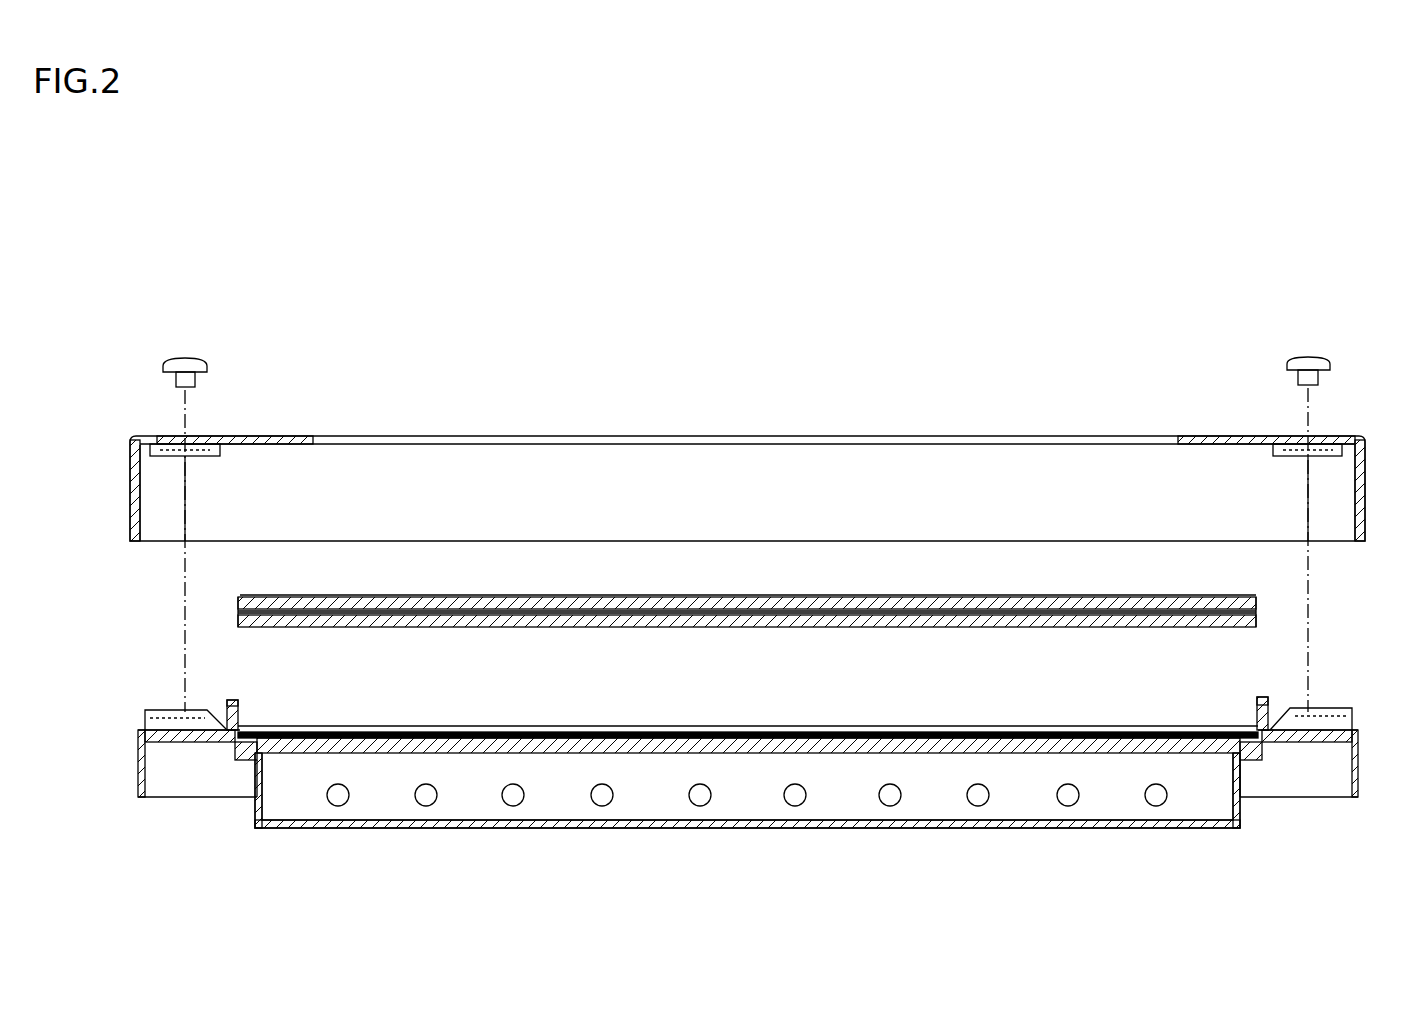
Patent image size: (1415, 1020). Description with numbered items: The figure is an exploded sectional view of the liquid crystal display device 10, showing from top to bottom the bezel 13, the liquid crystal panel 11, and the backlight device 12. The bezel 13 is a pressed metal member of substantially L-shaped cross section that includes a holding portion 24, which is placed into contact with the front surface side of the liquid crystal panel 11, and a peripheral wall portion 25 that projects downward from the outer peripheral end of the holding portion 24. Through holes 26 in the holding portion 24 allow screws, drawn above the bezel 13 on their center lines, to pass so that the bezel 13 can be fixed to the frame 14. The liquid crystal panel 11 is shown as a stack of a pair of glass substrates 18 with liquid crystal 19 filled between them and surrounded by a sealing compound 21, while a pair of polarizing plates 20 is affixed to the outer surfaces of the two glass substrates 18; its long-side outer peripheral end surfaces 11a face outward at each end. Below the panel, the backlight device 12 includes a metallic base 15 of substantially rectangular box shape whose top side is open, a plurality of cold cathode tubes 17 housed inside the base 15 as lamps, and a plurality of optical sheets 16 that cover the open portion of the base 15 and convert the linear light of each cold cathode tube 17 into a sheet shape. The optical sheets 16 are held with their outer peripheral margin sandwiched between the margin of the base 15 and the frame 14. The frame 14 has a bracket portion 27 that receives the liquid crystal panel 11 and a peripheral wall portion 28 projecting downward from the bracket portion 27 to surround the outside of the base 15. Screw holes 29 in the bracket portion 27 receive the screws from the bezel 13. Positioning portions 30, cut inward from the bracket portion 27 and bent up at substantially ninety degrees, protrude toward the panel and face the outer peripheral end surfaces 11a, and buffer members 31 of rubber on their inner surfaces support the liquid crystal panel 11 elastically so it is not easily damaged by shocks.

The liquid crystal display device 10 is at (907, 420).
The liquid crystal panel 11 is at (783, 619).
The outer peripheral end surface 11a is at (238, 616).
The backlight device 12 is at (905, 863).
The bezel 13 is at (268, 440).
The frame 14 is at (138, 742).
The base 15 is at (287, 828).
The optical sheets 16 is at (757, 742).
The cold cathode tubes 17 is at (513, 808).
The glass substrates 18 is at (605, 606).
The liquid crystal 19 is at (560, 613).
The polarizing plates 20 is at (657, 660).
The sealing compound 21 is at (248, 596).
The holding portion 24 is at (300, 436).
The peripheral wall portion 25 is at (130, 470).
The through holes 26 is at (185, 440).
The bracket portion 27 is at (236, 742).
The peripheral wall portion 28 is at (140, 768).
The screw holes 29 is at (183, 712).
The positioning portions 30 is at (230, 700).
The buffer members 31 is at (240, 703).